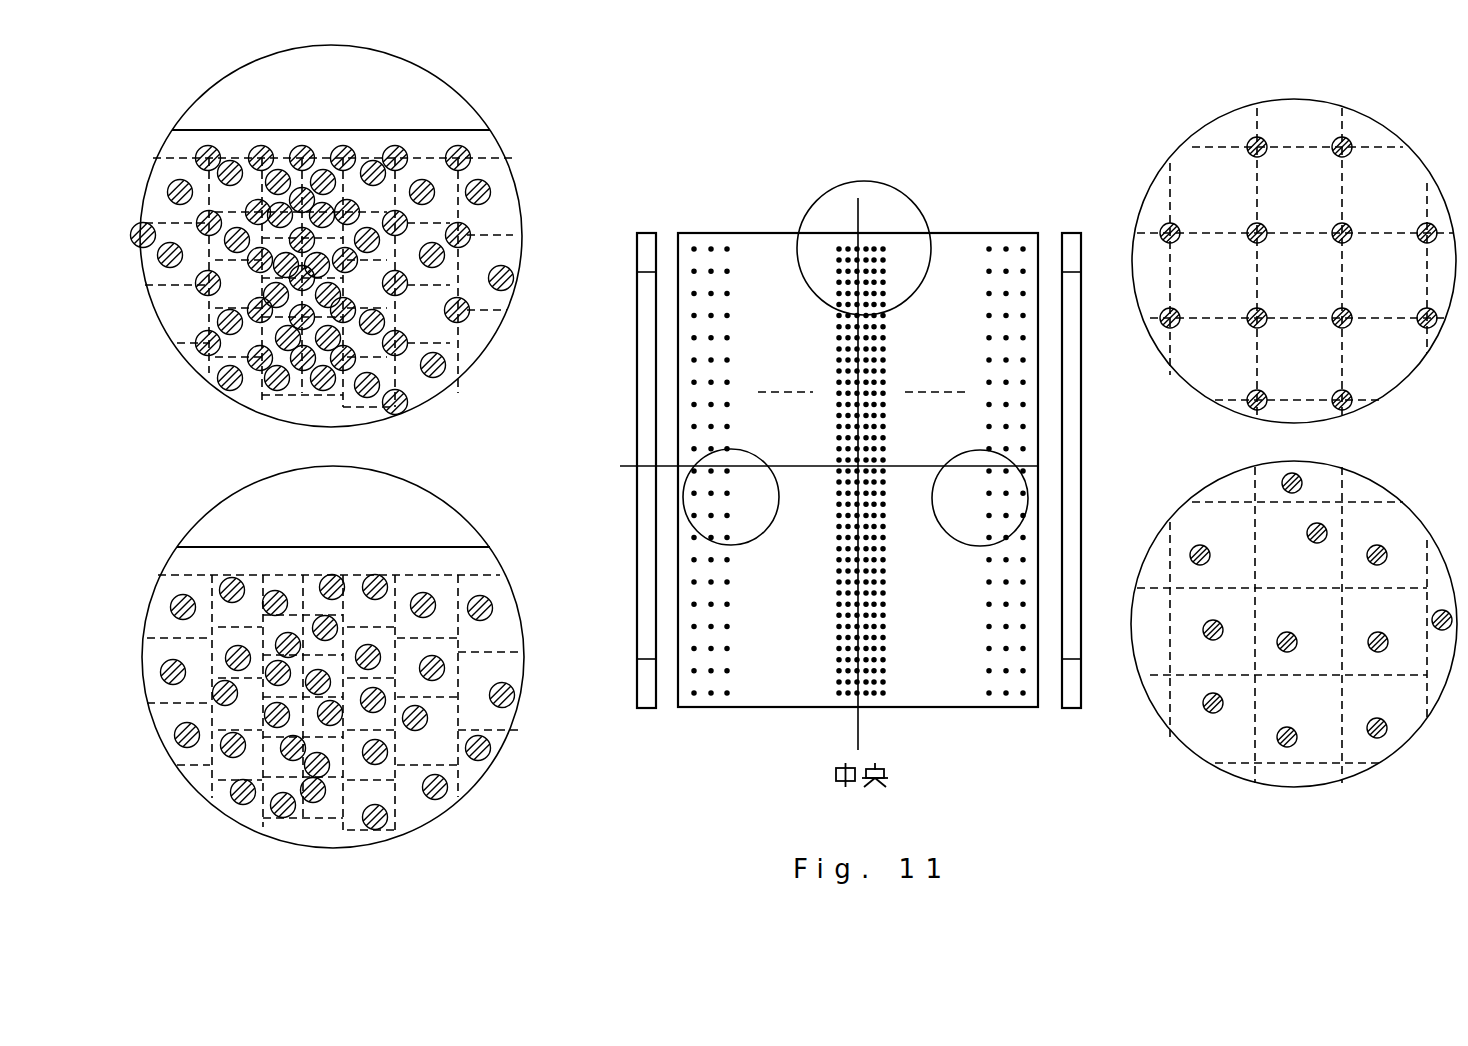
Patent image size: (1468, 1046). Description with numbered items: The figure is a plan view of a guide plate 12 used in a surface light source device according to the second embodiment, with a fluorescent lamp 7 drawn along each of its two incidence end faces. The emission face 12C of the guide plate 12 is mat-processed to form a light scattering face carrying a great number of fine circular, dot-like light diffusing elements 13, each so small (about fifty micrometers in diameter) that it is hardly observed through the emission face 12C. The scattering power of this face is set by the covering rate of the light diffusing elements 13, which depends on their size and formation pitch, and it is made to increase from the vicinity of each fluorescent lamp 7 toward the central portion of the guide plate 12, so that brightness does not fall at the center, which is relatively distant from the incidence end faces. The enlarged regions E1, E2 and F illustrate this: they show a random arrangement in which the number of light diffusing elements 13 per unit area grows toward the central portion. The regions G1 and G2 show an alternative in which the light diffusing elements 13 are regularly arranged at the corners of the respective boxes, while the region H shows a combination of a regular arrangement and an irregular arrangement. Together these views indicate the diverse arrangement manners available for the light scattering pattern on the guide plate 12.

The fluorescent lamp 7 is at (1070, 298).
The guide plate 12 is at (930, 708).
The emission face 12C is at (963, 683).
The light diffusing element 13 is at (202, 352).
The combined regular and irregular arrangement region H is at (825, 195).
The random arrangement region F is at (795, 253).
The random arrangement region E1 is at (782, 518).
The random arrangement region E2 is at (1027, 508).
The regular arrangement region G1 is at (758, 450).
The regular arrangement region G2 is at (1037, 465).